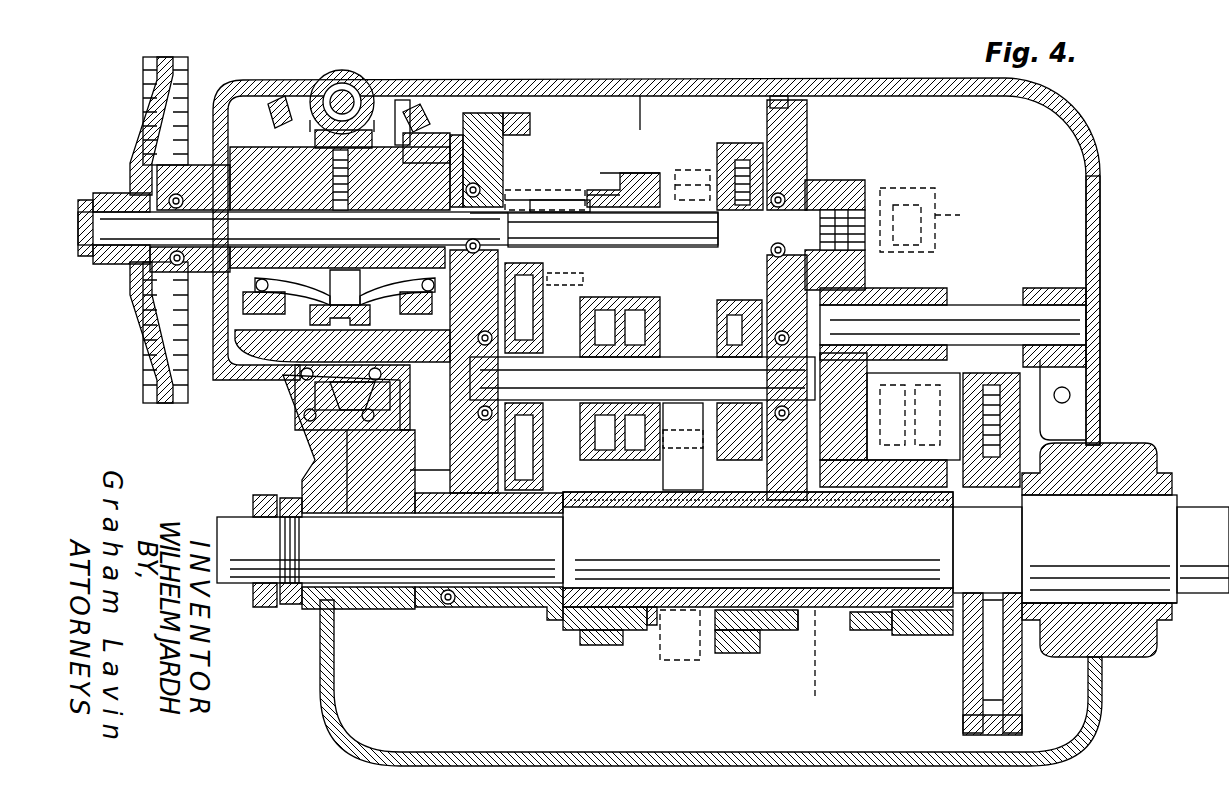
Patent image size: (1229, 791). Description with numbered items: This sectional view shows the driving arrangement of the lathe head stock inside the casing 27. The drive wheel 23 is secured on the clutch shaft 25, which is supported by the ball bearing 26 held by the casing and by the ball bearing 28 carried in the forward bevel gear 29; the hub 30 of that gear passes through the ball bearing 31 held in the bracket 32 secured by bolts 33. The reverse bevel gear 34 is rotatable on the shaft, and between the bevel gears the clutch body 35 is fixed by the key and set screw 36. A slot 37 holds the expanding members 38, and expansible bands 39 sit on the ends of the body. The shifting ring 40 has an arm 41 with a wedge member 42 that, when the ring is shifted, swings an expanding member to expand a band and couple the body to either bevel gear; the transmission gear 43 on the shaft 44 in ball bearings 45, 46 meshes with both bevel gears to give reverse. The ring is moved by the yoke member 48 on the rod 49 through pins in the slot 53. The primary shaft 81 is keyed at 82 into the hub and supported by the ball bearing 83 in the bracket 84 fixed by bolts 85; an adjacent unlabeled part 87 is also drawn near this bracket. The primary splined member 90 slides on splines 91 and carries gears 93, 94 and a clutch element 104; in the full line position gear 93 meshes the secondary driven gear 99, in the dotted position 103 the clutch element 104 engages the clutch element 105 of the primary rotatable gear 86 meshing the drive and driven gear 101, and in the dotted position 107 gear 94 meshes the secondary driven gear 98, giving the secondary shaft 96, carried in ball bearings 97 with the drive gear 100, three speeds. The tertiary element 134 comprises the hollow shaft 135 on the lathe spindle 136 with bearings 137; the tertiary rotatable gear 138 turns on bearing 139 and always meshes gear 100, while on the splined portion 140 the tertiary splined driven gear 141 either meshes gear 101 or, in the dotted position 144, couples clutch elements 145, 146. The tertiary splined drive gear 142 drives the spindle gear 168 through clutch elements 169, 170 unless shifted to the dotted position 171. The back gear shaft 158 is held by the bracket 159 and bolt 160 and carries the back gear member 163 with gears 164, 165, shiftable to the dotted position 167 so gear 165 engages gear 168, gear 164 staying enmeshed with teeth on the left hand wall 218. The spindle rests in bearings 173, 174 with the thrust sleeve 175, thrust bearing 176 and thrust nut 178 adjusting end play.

The drive wheel 23 is at (150, 73).
The clutch shaft 25 is at (130, 250).
The ball bearing 26 is at (130, 193).
The casing 27 is at (222, 92).
The ball bearing 28 is at (480, 150).
The forward bevel gear 29 is at (470, 113).
The hub 30 is at (500, 205).
The ball bearing 31 is at (540, 190).
The bracket 32 is at (462, 160).
The bolts 33 is at (515, 125).
The reverse bevel gear 34 is at (312, 96).
The clutch body 35 is at (425, 133).
The key and set screw 36 is at (348, 130).
The slot 37 is at (300, 312).
The expanding members 38 is at (260, 312).
The expansible members 39 is at (240, 325).
The shifting ring 40 is at (405, 100).
The arm 41 is at (300, 352).
The wedge member 42 is at (330, 285).
The transmission gear 43 is at (300, 482).
The shaft 44 is at (330, 420).
The ball bearing 45 is at (395, 430).
The ball bearing 46 is at (412, 462).
The yoke member 48 is at (415, 110).
The rod 49 is at (348, 150).
The slot 53 is at (350, 326).
The primary shaft 81 is at (600, 225).
The key 82 is at (480, 215).
The ball bearing 83 is at (822, 178).
The bracket 84 is at (772, 152).
The bolts 85 is at (822, 175).
The primary rotatable gear 86 is at (745, 150).
The clutch plate 87 is at (725, 180).
The primary splined member 90 is at (690, 175).
The splines 91 is at (520, 198).
The gear 93 is at (640, 185).
The gear 94 is at (600, 195).
The secondary shaft 96 is at (563, 390).
The ball bearings 97 is at (470, 340).
The secondary driven gear 98 is at (528, 312).
The secondary driven gear 99 is at (583, 279).
The drive gear 100 is at (578, 320).
The drive and driven gear 101 is at (727, 325).
The dotted line position 103 is at (690, 190).
The clutch element 104 is at (690, 185).
The clutch element 105 is at (705, 270).
The dotted line position 107 is at (610, 175).
The tertiary element 134 is at (985, 622).
The tertiary hollow shaft 135 is at (800, 620).
The lathe spindle 136 is at (520, 608).
The bearings 137 is at (633, 512).
The tertiary rotatable gear 138 is at (595, 635).
The bearing 139 is at (612, 648).
The splined portion 140 is at (690, 615).
The tertiary splined driven gear 141 is at (740, 655).
The tertiary splined drive gear 142 is at (903, 638).
The dotted line position 144 is at (660, 660).
The positive clutch element 145 is at (690, 455).
The positive clutch element 146 is at (652, 630).
The back gear shaft 158 is at (975, 300).
The bracket 159 is at (1100, 268).
The bolt 160 is at (1068, 392).
The back gear member 163 is at (905, 232).
The gear 164 is at (848, 192).
The gear 165 is at (935, 262).
The dotted line position 167 is at (925, 230).
The spindle gear 168 is at (1000, 470).
The clutch element 169 is at (955, 635).
The positive clutch element 170 is at (975, 520).
The dotted line position 171 is at (817, 667).
The bearing 173 is at (1130, 490).
The bearing 174 is at (312, 612).
The thrust sleeve 175 is at (467, 610).
The thrust bearing 176 is at (447, 607).
The thrust nut 178 is at (278, 607).
The left hand wall 218 is at (860, 640).